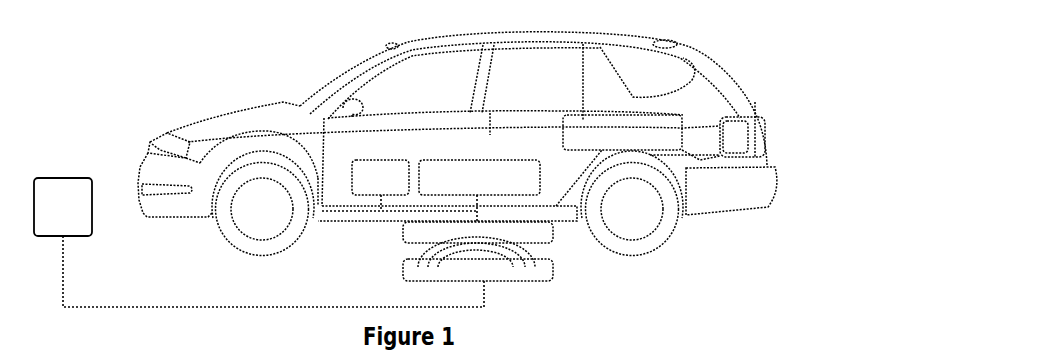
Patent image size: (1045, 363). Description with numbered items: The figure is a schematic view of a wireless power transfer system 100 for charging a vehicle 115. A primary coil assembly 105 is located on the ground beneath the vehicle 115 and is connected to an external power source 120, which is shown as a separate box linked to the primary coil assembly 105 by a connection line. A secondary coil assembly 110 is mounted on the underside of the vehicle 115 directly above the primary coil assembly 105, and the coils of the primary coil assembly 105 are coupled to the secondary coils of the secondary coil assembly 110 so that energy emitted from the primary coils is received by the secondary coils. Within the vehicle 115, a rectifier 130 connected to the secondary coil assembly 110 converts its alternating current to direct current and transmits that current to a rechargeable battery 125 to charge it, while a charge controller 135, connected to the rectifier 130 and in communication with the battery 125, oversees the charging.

The wireless power transfer system 100 is at (830, 62).
The primary coil assembly 105 is at (408, 265).
The secondary coil assembly 110 is at (547, 234).
The vehicle 115 is at (218, 113).
The external power source 120 is at (47, 220).
The rechargeable battery 125 is at (604, 142).
The rectifier 130 is at (463, 187).
The charge controller 135 is at (365, 187).